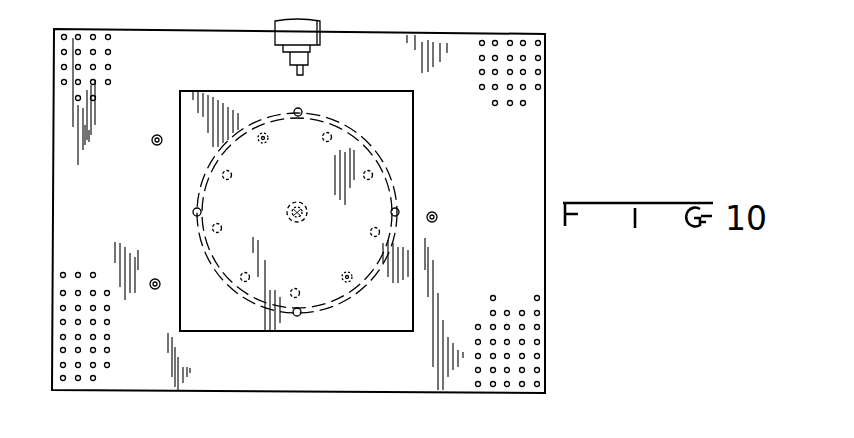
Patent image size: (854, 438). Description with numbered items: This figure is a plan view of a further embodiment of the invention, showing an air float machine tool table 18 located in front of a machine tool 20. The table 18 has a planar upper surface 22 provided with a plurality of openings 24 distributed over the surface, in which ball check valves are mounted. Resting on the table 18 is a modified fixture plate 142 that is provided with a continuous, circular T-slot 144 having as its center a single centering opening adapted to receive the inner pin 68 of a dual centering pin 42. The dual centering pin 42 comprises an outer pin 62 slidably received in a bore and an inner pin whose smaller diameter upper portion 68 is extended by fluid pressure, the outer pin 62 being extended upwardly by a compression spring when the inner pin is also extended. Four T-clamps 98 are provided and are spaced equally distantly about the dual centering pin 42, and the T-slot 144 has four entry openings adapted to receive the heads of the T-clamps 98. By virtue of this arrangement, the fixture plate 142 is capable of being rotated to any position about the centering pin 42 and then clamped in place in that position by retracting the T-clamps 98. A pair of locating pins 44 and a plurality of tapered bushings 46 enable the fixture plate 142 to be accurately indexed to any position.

The air float machine tool table 18 is at (420, 33).
The machine tool 20 is at (276, 27).
The planar upper surface 22 is at (530, 120).
The openings 24 is at (525, 57).
The centering pin 42 is at (290, 197).
The locating pins 44 is at (263, 133).
The tapered bushings 46 is at (331, 131).
The outer pin 62 is at (305, 222).
The upper portion of inner pin 68 is at (287, 212).
The T-clamps 98 is at (301, 108).
The fixture plate 142 is at (414, 118).
The circular T-slot 144 is at (200, 165).